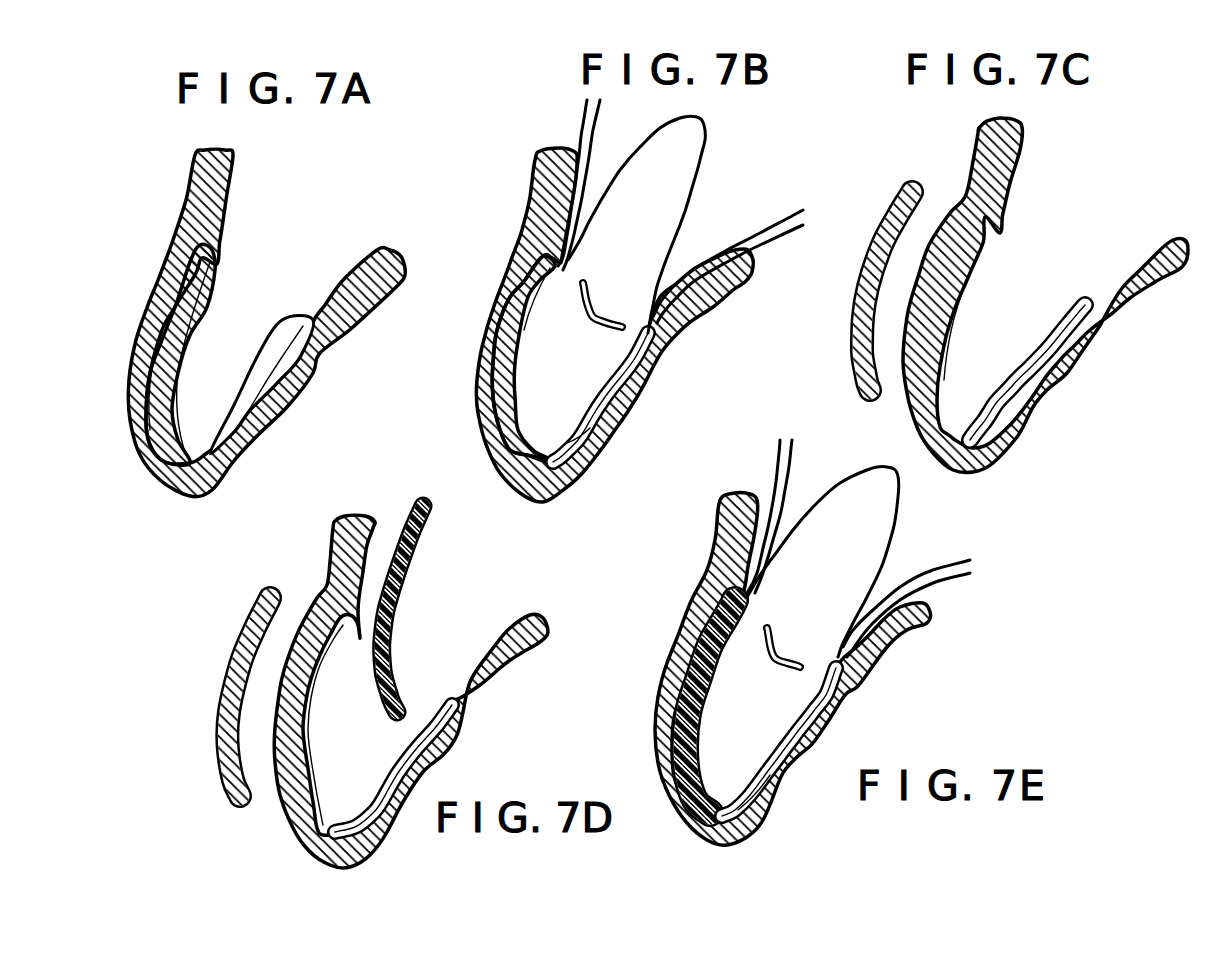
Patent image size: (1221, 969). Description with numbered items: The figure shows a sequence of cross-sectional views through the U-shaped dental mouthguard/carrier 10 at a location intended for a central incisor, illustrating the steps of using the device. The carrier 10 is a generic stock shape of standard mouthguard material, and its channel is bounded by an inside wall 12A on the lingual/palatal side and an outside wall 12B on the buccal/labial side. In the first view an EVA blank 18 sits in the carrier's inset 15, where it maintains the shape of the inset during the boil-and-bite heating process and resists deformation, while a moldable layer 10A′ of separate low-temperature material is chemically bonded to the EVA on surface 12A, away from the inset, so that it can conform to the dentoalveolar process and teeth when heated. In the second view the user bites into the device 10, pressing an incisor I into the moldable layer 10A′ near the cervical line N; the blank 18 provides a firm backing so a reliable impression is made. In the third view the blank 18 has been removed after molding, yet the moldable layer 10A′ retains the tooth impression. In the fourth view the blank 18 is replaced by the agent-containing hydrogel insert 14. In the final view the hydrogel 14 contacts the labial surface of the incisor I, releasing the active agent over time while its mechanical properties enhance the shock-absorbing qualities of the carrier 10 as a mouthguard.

In FIG. 7A, the carrier 10 is at (182, 498).
In FIG. 7B, the carrier 10 is at (545, 503).
In FIG. 7C, the carrier 10 is at (1007, 463).
In FIG. 7D, the carrier 10 is at (283, 815).
In FIG. 7E, the carrier 10 is at (675, 625).
In FIG. 7A, the moldable layer 10A′ is at (258, 368).
In FIG. 7B, the moldable layer 10A′ is at (613, 407).
In FIG. 7C, the moldable layer 10A′ is at (1035, 347).
In FIG. 7D, the moldable layer 10A′ is at (425, 716).
In FIG. 7E, the moldable layer 10A′ is at (848, 688).
In FIG. 7A, the inside wall 12A is at (297, 313).
In FIG. 7C, the inside wall 12A is at (1073, 300).
In FIG. 7A, the outside wall 12B is at (224, 262).
In FIG. 7D, the hydrogel insert 14 is at (417, 562).
In FIG. 7E, the hydrogel insert 14 is at (685, 708).
In FIG. 7A, the inset 15 is at (161, 428).
In FIG. 7C, the inset 15 is at (960, 282).
In FIG. 7D, the inset 15 is at (313, 755).
In FIG. 7A, the EVA blank 18 is at (167, 371).
In FIG. 7B, the EVA blank 18 is at (493, 385).
In FIG. 7C, the EVA blank 18 is at (893, 208).
In FIG. 7D, the EVA blank 18 is at (248, 605).
In FIG. 7B, the cervical line N is at (653, 297).
In FIG. 7B, the incisor I is at (583, 437).
In FIG. 7E, the incisor I is at (760, 780).